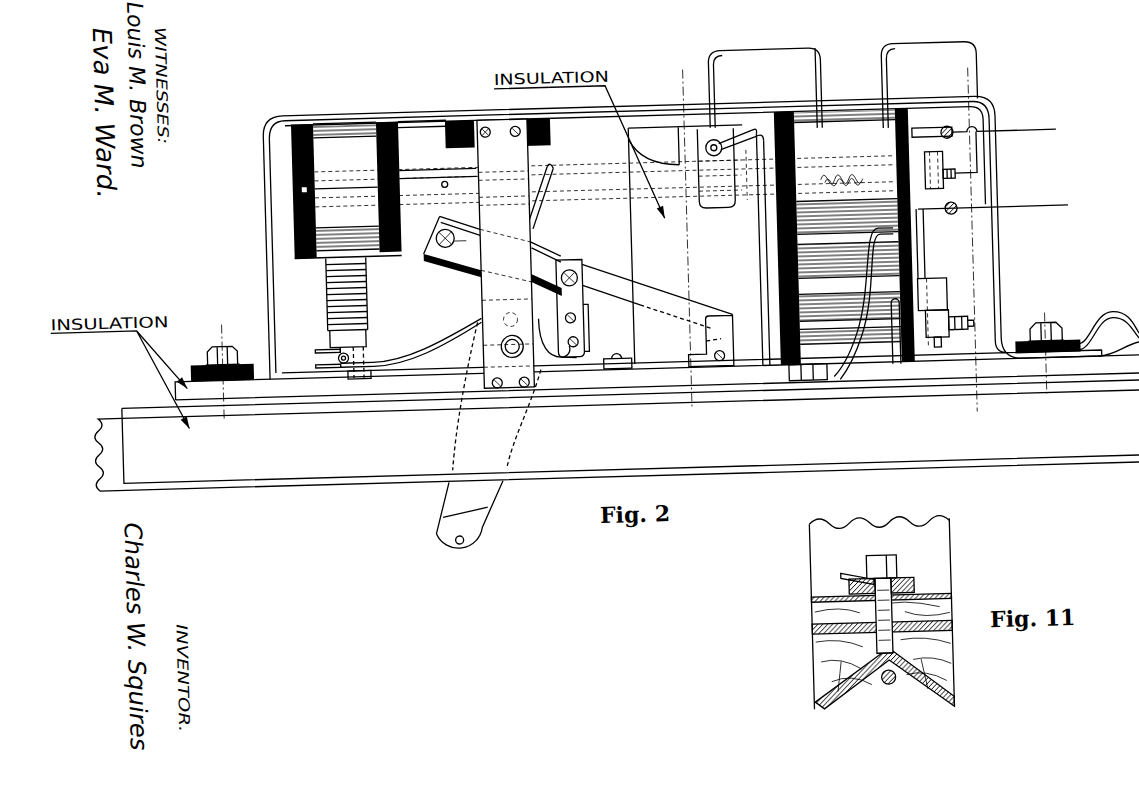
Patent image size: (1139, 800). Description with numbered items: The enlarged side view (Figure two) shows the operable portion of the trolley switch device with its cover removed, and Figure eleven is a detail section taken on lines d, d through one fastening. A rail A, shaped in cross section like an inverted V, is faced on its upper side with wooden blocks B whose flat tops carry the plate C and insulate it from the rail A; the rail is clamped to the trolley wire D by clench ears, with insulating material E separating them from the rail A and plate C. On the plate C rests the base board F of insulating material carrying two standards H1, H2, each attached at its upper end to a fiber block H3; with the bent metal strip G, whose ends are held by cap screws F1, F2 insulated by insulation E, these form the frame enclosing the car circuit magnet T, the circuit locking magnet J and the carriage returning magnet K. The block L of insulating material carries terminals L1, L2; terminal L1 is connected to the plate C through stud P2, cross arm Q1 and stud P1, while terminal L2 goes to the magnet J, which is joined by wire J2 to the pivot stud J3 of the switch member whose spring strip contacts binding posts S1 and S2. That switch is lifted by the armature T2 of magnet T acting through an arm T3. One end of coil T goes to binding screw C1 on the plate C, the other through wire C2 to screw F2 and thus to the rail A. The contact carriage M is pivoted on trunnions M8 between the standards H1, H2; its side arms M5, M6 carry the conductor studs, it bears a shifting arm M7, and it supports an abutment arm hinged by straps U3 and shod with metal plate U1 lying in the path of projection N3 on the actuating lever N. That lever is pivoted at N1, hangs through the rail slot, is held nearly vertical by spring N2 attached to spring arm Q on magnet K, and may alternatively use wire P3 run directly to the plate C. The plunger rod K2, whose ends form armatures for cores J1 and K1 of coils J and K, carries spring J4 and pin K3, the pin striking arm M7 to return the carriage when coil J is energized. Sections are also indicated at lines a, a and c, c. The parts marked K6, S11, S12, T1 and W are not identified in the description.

In FIG. 2, the rail A is at (616, 440).
In FIG. 11, the rail A is at (841, 682).
In FIG. 2, the wooden blocks B is at (630, 431).
In FIG. 11, the wooden blocks B is at (815, 657).
In FIG. 2, the plate C is at (142, 390).
In FIG. 11, the plate C is at (812, 626).
In FIG. 2, the binding screw C1 is at (811, 373).
In FIG. 11, the wire C2 is at (846, 572).
In FIG. 11, the trolley wire D is at (893, 683).
In FIG. 2, the insulating material E is at (190, 368).
In FIG. 11, the insulating material E is at (913, 590).
In FIG. 2, the base board F is at (657, 378).
In FIG. 11, the base board F is at (820, 607).
In FIG. 2, the cap screw F1 is at (236, 348).
In FIG. 2, the cap screw F2 is at (1058, 323).
In FIG. 11, the cap screw F2 is at (897, 563).
In FIG. 2, the bent metal strip G is at (266, 249).
In FIG. 11, the bent metal strip G is at (822, 534).
In FIG. 2, the standard H1 is at (505, 253).
In FIG. 2, the standard H2 is at (495, 161).
In FIG. 2, the insulator block H3 is at (553, 133).
In FIG. 2, the circuit locking magnet J is at (844, 236).
In FIG. 2, the fixed core J1 is at (945, 161).
In FIG. 2, the wire J2 is at (947, 28).
In FIG. 2, the pivot stud J3 is at (998, 178).
In FIG. 2, the spring J4 is at (849, 180).
In FIG. 2, the carriage returning magnet K is at (346, 190).
In FIG. 2, the fixed core K1 is at (302, 193).
In FIG. 2, the plunger rod K2 is at (418, 180).
In FIG. 2, the pin K3 is at (443, 190).
In FIG. 2, the coil top plate K6 is at (413, 125).
In FIG. 2, the contact block L is at (767, 152).
In FIG. 2, the terminal L1 is at (708, 128).
In FIG. 2, the terminal L2 is at (730, 118).
In FIG. 2, the contact carriage M is at (447, 262).
In FIG. 2, the arm M5 is at (603, 283).
In FIG. 2, the arm M6 is at (637, 300).
In FIG. 2, the shifting arm M7 is at (536, 206).
In FIG. 2, the trunnion M8 is at (498, 273).
In FIG. 2, the actuating lever N is at (473, 505).
In FIG. 2, the pivot N1 is at (518, 344).
In FIG. 2, the spring N2 is at (430, 342).
In FIG. 2, the projection N3 is at (576, 360).
In FIG. 2, the stud P1 is at (370, 340).
In FIG. 2, the stud P2 is at (384, 342).
In FIG. 2, the wire P3 is at (767, 127).
In FIG. 2, the spring arm Q is at (368, 291).
In FIG. 2, the cross arm Q1 is at (337, 358).
In FIG. 2, the binding post S1 is at (932, 243).
In FIG. 2, the binding post S2 is at (927, 128).
In FIG. 2, the wire S11 is at (1023, 128).
In FIG. 2, the wire S12 is at (1062, 203).
In FIG. 2, the car circuit magnet T is at (849, 304).
In FIG. 2, the terminal block T1 is at (932, 285).
In FIG. 2, the armature T2 is at (942, 349).
In FIG. 2, the arm T3 is at (948, 313).
In FIG. 2, the metal plate U1 is at (587, 323).
In FIG. 2, the hinge strap U3 is at (588, 338).
In FIG. 2, the insulation W is at (688, 244).
In FIG. 2, the section line a is at (970, 240).
In FIG. 2, the section line c is at (686, 237).
In FIG. 2, the section line d is at (1045, 355).